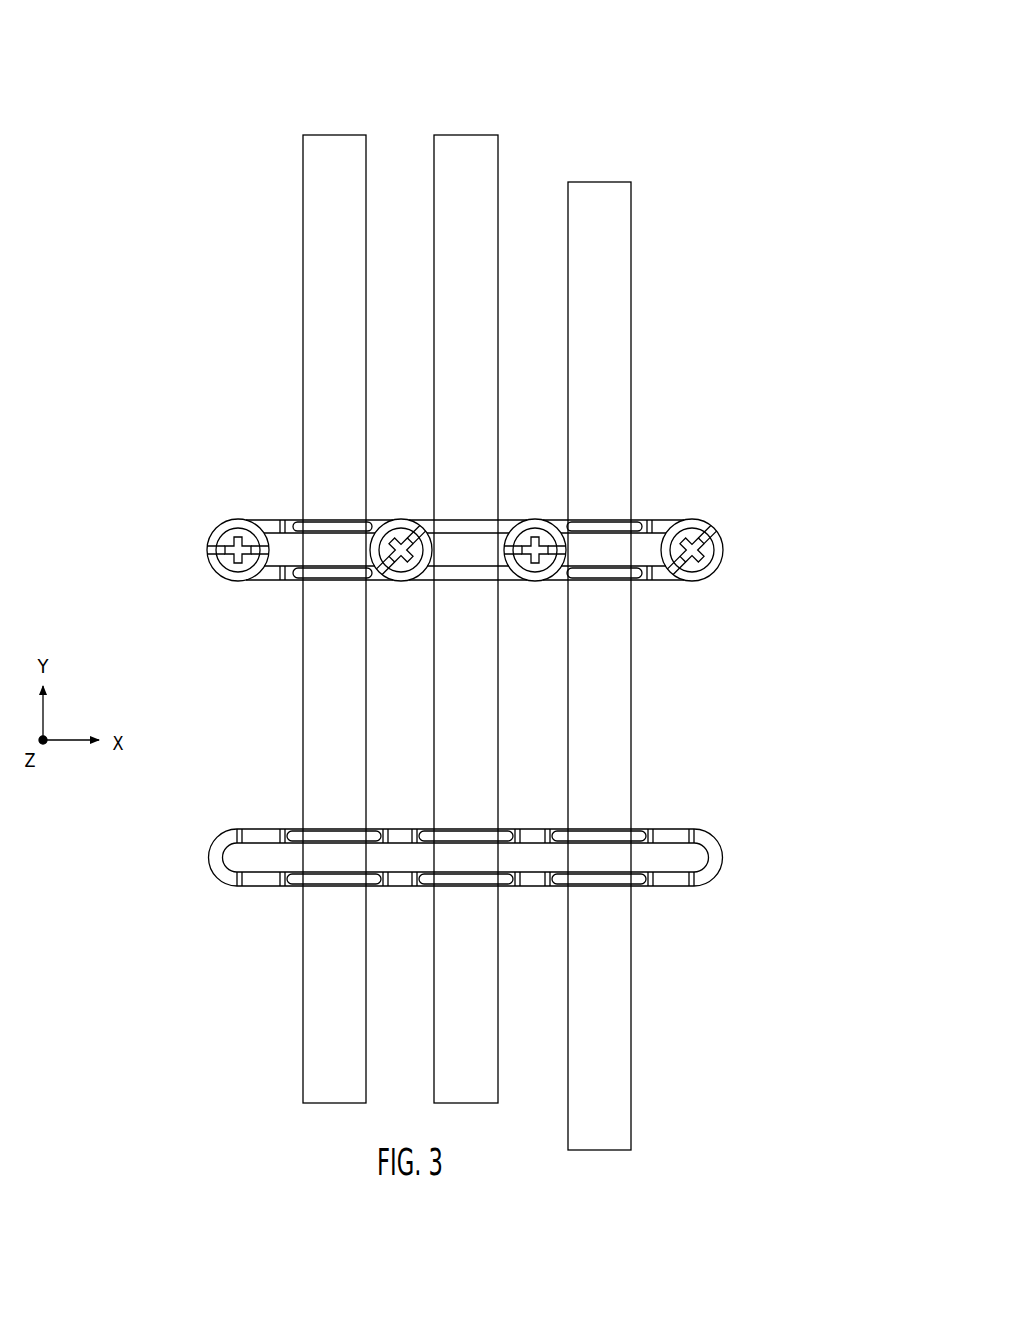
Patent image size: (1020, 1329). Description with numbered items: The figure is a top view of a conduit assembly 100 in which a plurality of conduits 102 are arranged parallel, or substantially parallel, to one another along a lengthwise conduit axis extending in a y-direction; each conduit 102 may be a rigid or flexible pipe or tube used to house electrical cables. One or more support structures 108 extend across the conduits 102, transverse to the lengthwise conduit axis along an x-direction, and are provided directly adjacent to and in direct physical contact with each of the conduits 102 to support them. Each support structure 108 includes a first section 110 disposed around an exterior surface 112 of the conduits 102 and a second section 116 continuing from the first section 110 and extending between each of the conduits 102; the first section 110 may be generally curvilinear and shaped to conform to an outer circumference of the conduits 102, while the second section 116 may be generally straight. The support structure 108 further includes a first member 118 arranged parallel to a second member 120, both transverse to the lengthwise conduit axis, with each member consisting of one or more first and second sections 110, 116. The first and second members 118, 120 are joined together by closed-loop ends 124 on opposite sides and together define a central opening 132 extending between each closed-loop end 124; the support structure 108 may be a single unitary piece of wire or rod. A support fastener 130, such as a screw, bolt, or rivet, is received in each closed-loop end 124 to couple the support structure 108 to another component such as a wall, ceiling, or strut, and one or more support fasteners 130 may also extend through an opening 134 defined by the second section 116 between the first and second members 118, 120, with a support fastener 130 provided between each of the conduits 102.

The fence/panel assembly 100 is at (176, 285).
The panel set 102 is at (300, 90).
The bracket 108 is at (320, 512).
The bracket rail 110 is at (612, 520).
The panel 112 is at (610, 651).
The rail segment 116 is at (275, 578).
The lower rail 118 is at (605, 892).
The upper rail 120 is at (605, 815).
The end portion 124 is at (720, 565).
The fastener opening 130 is at (234, 543).
The end channel 132 is at (690, 859).
The channel gap 134 is at (530, 864).